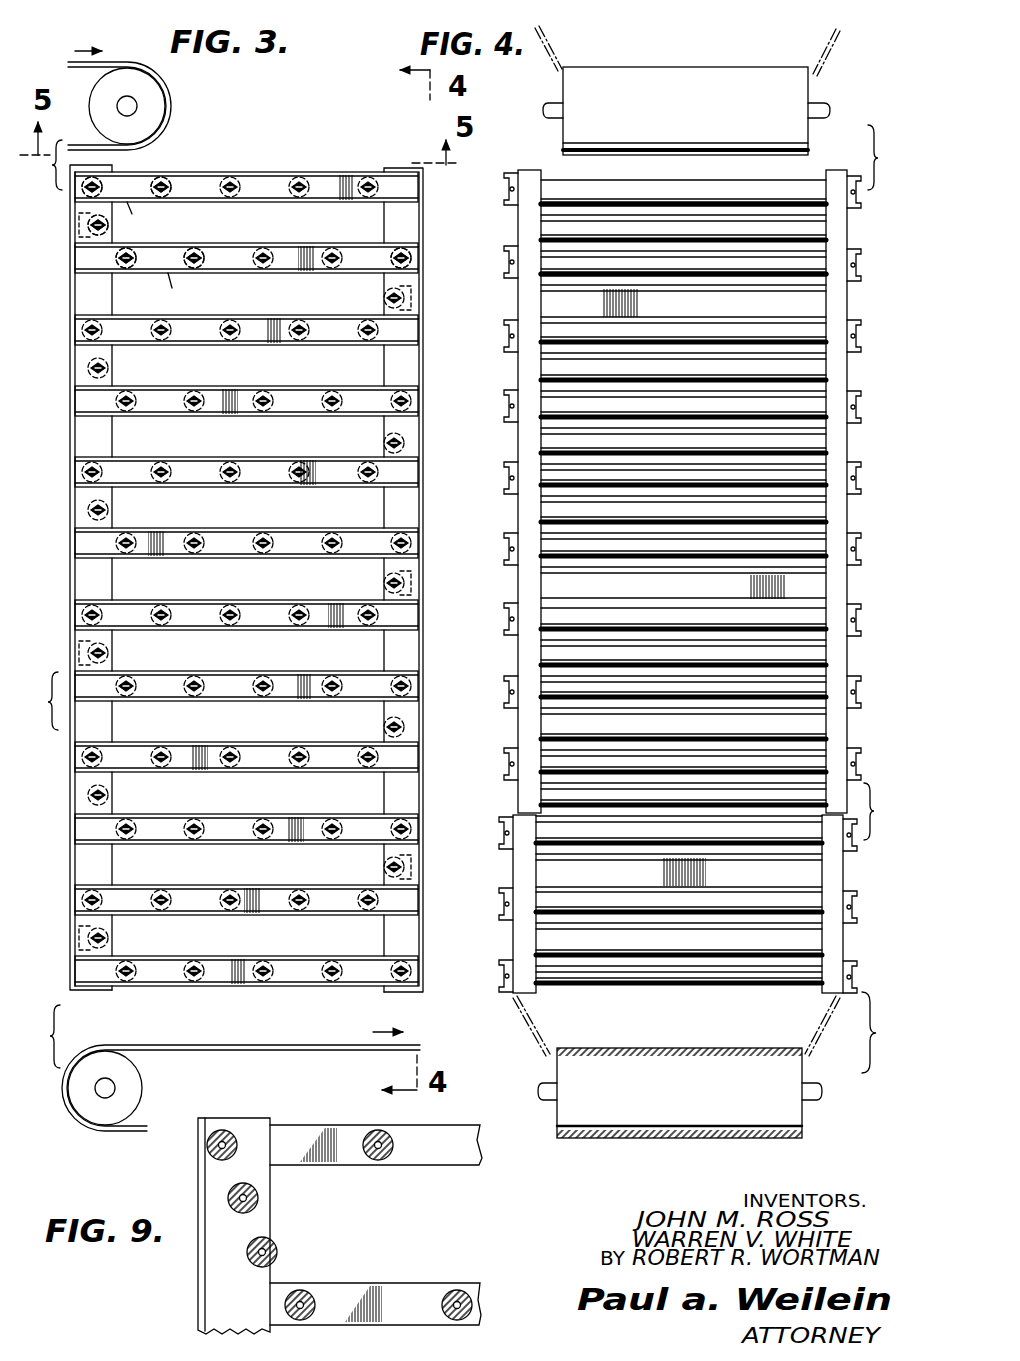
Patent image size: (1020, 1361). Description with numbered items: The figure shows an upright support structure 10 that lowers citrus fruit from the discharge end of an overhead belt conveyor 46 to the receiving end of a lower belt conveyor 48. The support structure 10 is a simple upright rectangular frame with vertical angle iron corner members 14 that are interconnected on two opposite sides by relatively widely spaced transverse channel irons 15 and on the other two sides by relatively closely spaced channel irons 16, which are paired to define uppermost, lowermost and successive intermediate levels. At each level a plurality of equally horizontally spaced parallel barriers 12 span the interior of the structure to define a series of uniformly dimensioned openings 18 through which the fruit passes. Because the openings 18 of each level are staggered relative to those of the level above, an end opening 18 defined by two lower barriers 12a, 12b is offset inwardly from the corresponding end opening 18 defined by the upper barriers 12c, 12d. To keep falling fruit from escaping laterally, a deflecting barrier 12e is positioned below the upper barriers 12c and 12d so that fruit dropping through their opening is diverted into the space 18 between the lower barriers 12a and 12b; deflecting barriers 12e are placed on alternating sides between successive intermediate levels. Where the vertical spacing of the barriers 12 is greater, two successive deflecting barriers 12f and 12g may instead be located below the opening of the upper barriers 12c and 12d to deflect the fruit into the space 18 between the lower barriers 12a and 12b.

In FIG. 3, the upright support structure 10 is at (248, 578).
In FIG. 4, the upright support structure 10 is at (671, 581).
In FIG. 3, the barriers 12 is at (304, 172).
In FIG. 4, the barriers 12 is at (684, 186).
In FIG. 9, the barriers 12 is at (340, 1226).
In FIG. 3, the lower barrier 12a is at (136, 270).
In FIG. 4, the lower barrier 12a is at (541, 280).
In FIG. 9, the lower barrier 12a is at (284, 1306).
In FIG. 3, the lower barrier 12b is at (200, 270).
In FIG. 9, the lower barrier 12b is at (457, 1290).
In FIG. 3, the upper barrier 12c is at (108, 176).
In FIG. 9, the upper barrier 12c is at (212, 1156).
In FIG. 3, the upper barrier 12d is at (178, 176).
In FIG. 9, the upper barrier 12d is at (390, 1158).
In FIG. 3, the deflecting barrier 12e is at (112, 228).
In FIG. 4, the deflecting barrier 12e is at (551, 228).
In FIG. 9, the deflecting barrier 12f is at (259, 1198).
In FIG. 9, the deflecting barrier 12g is at (278, 1251).
In FIG. 3, the vertical angle iron corner members 14 is at (76, 500).
In FIG. 4, the vertical angle iron corner members 14 is at (843, 440).
In FIG. 3, the transverse channel irons 15 is at (80, 232).
In FIG. 4, the transverse channel irons 15 is at (665, 586).
In FIG. 3, the channel irons 16 is at (278, 346).
In FIG. 4, the channel irons 16 is at (860, 258).
In FIG. 3, the openings 18 is at (160, 254).
In FIG. 3, the overhead belt conveyor 46 is at (174, 80).
In FIG. 4, the overhead belt conveyor 46 is at (702, 66).
In FIG. 3, the lower belt conveyor 48 is at (92, 1044).
In FIG. 4, the lower belt conveyor 48 is at (648, 1050).